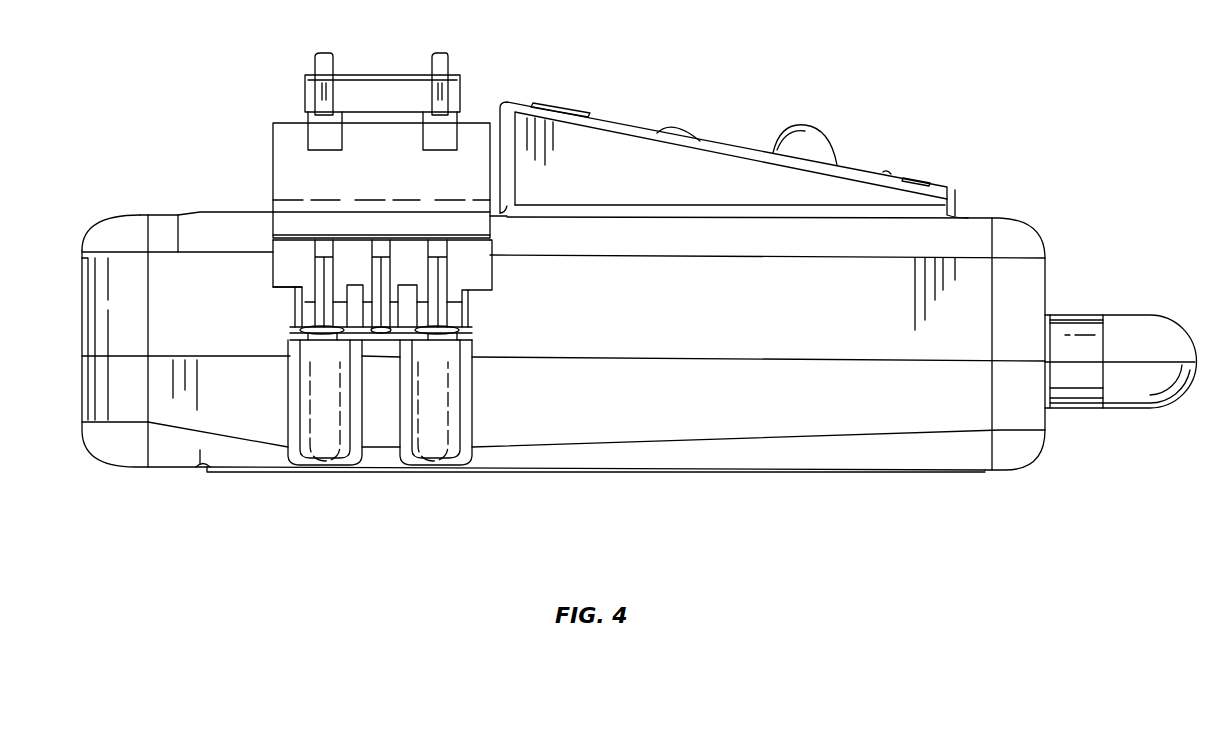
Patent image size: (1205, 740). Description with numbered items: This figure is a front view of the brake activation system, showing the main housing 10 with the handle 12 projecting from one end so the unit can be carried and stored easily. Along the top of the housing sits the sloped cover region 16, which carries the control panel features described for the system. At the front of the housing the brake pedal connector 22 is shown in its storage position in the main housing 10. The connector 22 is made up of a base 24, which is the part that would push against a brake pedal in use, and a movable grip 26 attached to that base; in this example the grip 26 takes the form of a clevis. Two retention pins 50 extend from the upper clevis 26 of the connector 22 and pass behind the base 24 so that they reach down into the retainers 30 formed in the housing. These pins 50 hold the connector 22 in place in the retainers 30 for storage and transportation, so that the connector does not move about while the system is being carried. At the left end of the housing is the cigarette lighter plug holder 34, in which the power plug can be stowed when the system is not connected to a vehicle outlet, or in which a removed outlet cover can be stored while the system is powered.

The main housing 10 is at (855, 312).
The handle 12 is at (1150, 315).
The lid / sloped cover 16 is at (715, 142).
The brake pedal connector 22 is at (262, 155).
The base 24 is at (490, 267).
The movable grip 26 is at (462, 92).
The retainers 30 is at (320, 447).
The cigarette lighter plug holder 34 is at (128, 216).
The retention pins 50 is at (312, 328).